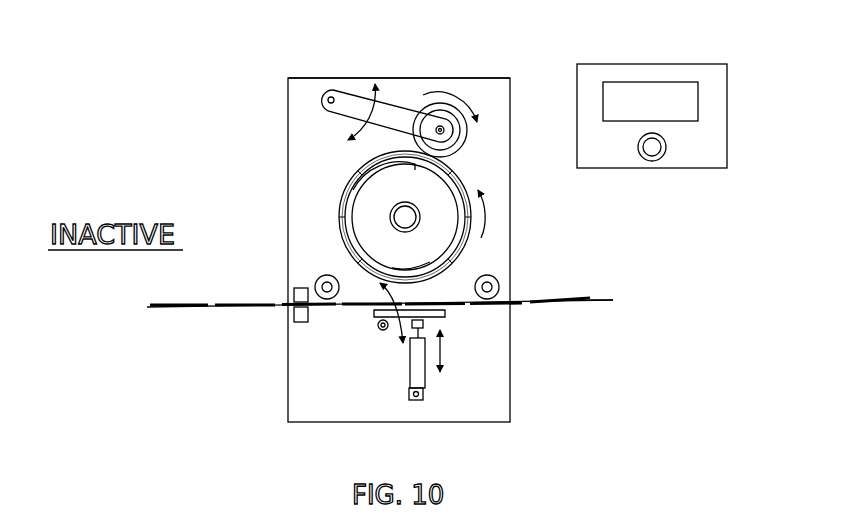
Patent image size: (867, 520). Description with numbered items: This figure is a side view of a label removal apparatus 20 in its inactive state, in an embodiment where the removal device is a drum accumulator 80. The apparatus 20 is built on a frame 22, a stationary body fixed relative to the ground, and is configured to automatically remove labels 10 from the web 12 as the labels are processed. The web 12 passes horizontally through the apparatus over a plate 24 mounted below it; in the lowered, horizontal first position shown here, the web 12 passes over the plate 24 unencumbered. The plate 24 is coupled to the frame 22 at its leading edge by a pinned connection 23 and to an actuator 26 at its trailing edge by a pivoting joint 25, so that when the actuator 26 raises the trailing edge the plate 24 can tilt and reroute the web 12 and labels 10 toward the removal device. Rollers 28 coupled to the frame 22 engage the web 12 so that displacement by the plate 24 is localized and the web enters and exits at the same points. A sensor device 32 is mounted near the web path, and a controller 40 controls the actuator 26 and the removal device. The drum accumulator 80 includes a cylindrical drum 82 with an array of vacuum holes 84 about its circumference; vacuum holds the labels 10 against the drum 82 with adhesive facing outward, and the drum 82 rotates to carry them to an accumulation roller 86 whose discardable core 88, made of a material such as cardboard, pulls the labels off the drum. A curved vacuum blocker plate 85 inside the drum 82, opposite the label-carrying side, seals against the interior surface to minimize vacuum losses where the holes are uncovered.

The labels 10 is at (580, 298).
The web 12 is at (595, 302).
The label removal apparatus 20 is at (350, 50).
The frame 22 is at (288, 413).
The pinned connection 23 is at (380, 327).
The plate 24 is at (445, 316).
The pivoting joint 25 is at (443, 350).
The actuator 26 is at (427, 385).
The rollers 28 is at (325, 276).
The sensor device 32 is at (294, 290).
The controller 40 is at (718, 112).
The drum accumulator 80 is at (472, 94).
The drum 82 is at (462, 179).
The vacuum holes 84 is at (470, 215).
The vacuum blocker plate 85 is at (357, 188).
The accumulation roller 86 is at (455, 131).
The discardable core 88 is at (423, 103).